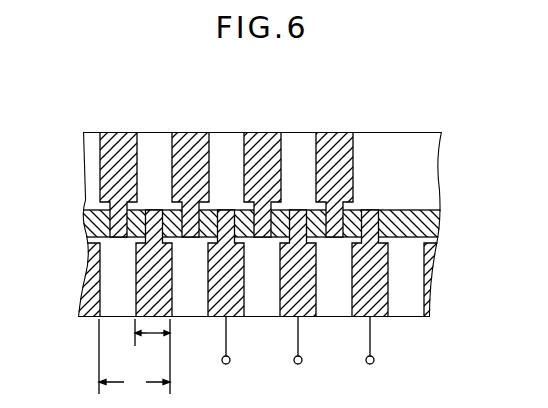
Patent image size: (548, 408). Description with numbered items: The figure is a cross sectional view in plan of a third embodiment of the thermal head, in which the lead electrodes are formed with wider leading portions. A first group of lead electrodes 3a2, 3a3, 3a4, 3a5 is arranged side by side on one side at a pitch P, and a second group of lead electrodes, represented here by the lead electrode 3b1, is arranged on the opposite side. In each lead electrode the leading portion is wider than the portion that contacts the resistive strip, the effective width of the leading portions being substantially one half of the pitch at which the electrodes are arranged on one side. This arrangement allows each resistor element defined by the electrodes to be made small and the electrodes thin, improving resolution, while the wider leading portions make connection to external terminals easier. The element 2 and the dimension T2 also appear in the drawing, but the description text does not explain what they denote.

The substrate body 2 is at (248, 238).
The lead electrode 3a2 is at (112, 138).
The lead electrode 3a3 is at (182, 140).
The lead electrode 3a4 is at (253, 142).
The lead electrode 3a5 is at (316, 159).
The lead electrode 3b1 is at (92, 287).
The intermediate layer thickness T2 is at (95, 212).